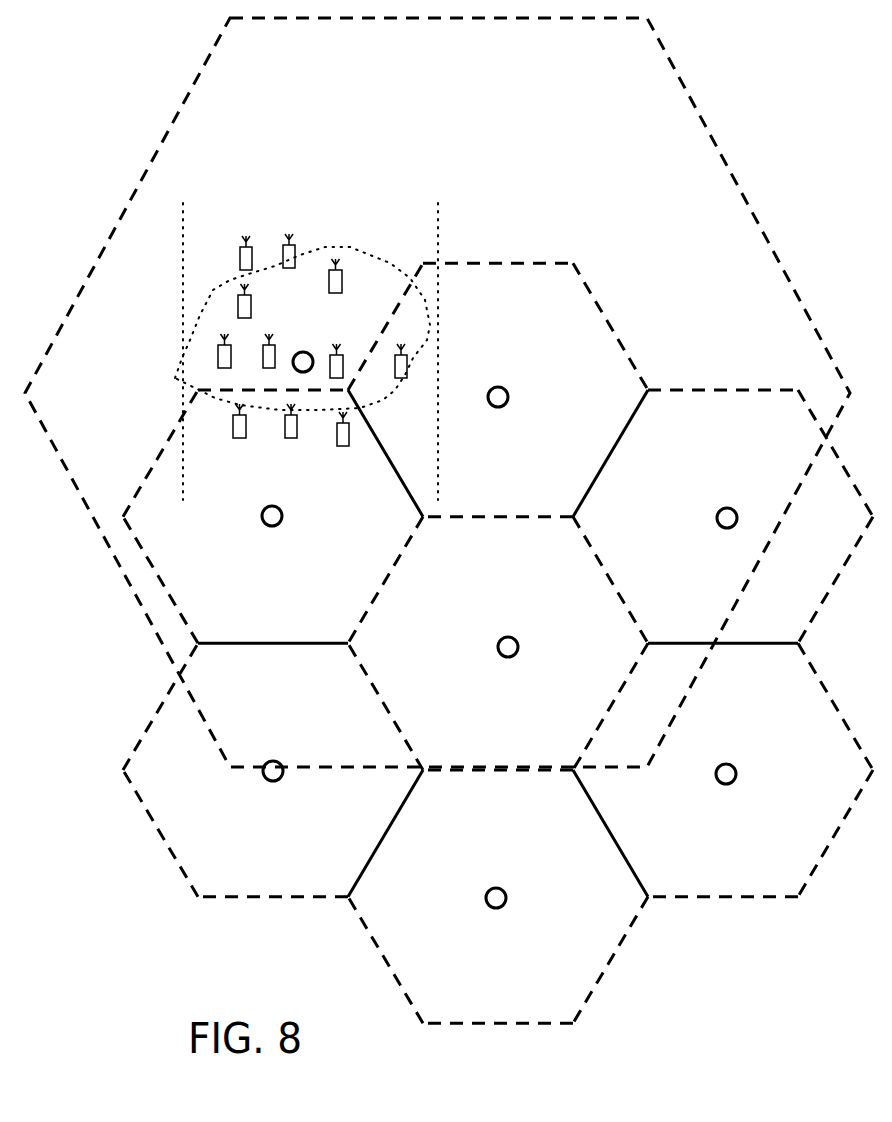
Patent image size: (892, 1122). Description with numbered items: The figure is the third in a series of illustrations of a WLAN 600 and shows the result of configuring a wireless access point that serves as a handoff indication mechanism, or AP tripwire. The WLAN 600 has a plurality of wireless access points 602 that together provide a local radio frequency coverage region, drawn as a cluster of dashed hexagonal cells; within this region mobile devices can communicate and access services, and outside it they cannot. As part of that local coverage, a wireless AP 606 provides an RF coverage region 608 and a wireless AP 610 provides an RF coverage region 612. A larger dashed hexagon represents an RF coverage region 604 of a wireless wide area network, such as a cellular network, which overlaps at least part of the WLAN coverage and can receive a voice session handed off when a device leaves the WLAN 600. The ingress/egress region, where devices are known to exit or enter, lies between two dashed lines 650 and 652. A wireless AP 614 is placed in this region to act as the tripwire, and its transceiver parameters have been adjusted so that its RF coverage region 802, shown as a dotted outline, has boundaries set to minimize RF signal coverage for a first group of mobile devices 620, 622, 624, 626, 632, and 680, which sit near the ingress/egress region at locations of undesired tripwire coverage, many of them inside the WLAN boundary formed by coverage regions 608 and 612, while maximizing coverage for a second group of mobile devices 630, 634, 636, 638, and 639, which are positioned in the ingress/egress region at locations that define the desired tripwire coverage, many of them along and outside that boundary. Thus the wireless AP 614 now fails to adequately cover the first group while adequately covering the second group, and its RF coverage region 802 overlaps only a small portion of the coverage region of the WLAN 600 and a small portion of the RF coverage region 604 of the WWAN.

The WLAN 600 is at (274, 971).
The wireless access points 602 is at (140, 833).
The RF coverage region of the WWAN 604 is at (93, 268).
The wireless AP 606 is at (265, 523).
The RF coverage region 608 is at (152, 468).
The wireless AP 610 is at (489, 404).
The RF coverage region 612 is at (591, 293).
The wireless AP 614 is at (308, 343).
The mobile device 620 is at (233, 427).
The mobile device 622 is at (285, 427).
The mobile device 624 is at (337, 437).
The mobile device 626 is at (395, 370).
The mobile device 630 is at (238, 308).
The mobile device 632 is at (295, 260).
The mobile device 634 is at (329, 290).
The mobile device 636 is at (218, 357).
The mobile device 638 is at (263, 357).
The mobile device 639 is at (343, 366).
The dashed line 650 is at (183, 203).
The dashed line 652 is at (438, 203).
The mobile device 680 is at (240, 262).
The RF coverage region of wireless AP 614 802 is at (366, 248).